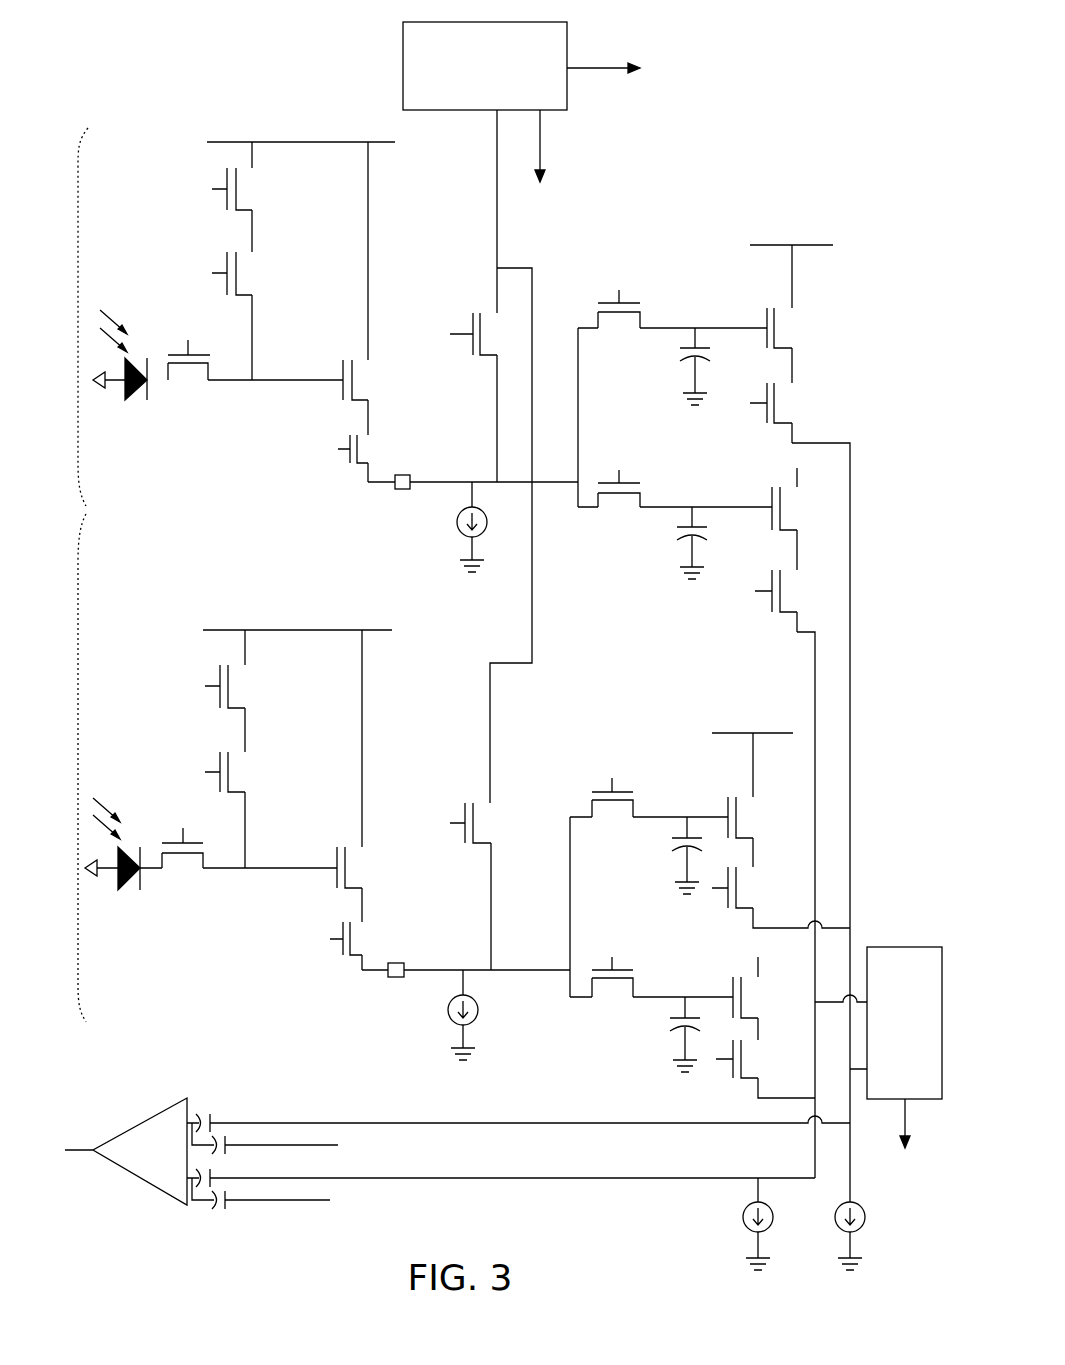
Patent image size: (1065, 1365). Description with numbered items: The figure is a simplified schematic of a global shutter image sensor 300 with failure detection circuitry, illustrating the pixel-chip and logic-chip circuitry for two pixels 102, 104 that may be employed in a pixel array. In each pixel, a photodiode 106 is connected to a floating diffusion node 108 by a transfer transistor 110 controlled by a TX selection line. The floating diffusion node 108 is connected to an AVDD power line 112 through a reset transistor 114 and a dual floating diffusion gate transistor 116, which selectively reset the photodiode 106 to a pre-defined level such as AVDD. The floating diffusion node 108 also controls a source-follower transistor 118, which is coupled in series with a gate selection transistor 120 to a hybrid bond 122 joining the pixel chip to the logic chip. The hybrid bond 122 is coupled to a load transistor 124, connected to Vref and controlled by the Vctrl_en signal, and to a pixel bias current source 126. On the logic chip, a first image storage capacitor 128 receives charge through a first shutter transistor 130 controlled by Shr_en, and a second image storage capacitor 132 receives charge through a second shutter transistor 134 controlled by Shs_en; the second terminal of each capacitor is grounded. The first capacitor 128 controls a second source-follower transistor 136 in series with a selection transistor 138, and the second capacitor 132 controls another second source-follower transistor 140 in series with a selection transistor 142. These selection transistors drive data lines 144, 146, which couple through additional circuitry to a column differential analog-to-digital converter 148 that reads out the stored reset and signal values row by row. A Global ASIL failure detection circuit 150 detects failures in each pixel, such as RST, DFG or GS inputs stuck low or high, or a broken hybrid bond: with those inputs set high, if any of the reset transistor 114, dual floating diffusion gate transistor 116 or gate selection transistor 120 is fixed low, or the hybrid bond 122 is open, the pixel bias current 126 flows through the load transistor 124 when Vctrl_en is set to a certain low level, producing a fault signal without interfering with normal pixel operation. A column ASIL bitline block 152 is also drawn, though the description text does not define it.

The global shutter image sensor 300 is at (483, 636).
The pixel 102 is at (301, 449).
The pixel 104 is at (297, 787).
The photodiode 106 is at (129, 402).
The floating diffusion node 108 is at (275, 413).
The transfer transistor 110 is at (155, 329).
The AVDD power line 112 is at (288, 119).
The reset transistor 114 is at (202, 170).
The dual floating diffusion gate transistor 116 is at (186, 254).
The source-follower transistor 118 is at (339, 288).
The gate selection transistor 120 is at (317, 476).
The hybrid bond 122 is at (473, 467).
The load transistor 124 is at (456, 296).
The pixel bias current source 126 is at (440, 527).
The first image storage capacitor 128 is at (663, 366).
The first shutter transistor 130 is at (672, 379).
The second image storage capacitor 132 is at (661, 543).
The second shutter transistor 134 is at (675, 474).
The second source-follower transistor 136 is at (782, 314).
The selection transistor 138 is at (762, 393).
The second source-follower transistor 140 is at (765, 513).
The selection transistor 142 is at (766, 582).
The data line 144 is at (830, 831).
The data line 146 is at (772, 905).
The differential analog-to-digital converter 148 is at (457, 1132).
The Global ASIL failure detection circuit 150 is at (514, 56).
The column ASIL bitline circuit 152 is at (904, 1036).